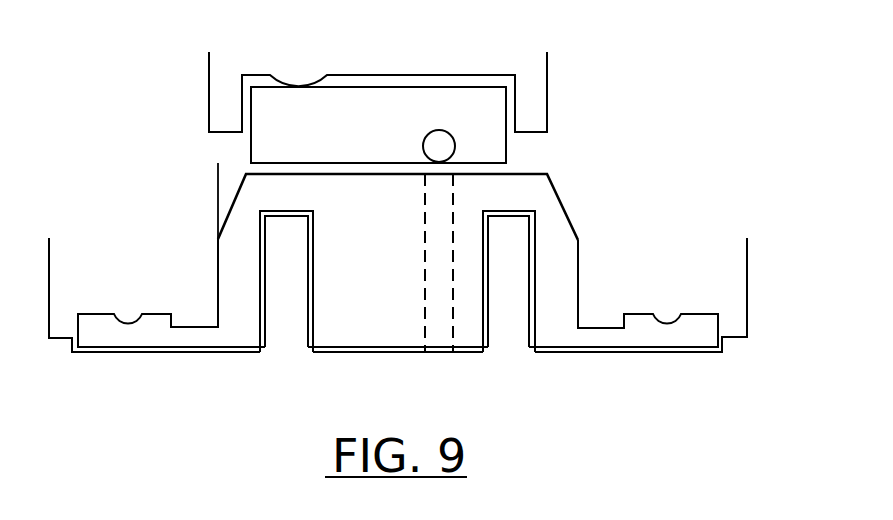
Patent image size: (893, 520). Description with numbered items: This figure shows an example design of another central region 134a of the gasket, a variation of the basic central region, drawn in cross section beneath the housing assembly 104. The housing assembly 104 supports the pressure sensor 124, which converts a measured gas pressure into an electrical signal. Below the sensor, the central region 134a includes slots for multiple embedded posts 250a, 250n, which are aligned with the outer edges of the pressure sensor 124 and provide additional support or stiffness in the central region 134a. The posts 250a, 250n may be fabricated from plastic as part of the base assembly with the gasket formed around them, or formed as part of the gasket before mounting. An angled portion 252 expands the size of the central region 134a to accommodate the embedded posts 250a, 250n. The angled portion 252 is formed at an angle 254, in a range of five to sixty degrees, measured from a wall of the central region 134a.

The housing assembly 104 is at (548, 90).
The pressure sensor 124 is at (333, 136).
The angled portion 252 is at (565, 212).
The angle 254 is at (270, 203).
The central region 134a is at (218, 303).
The embedded post 250a is at (296, 349).
The embedded post 250n is at (509, 349).